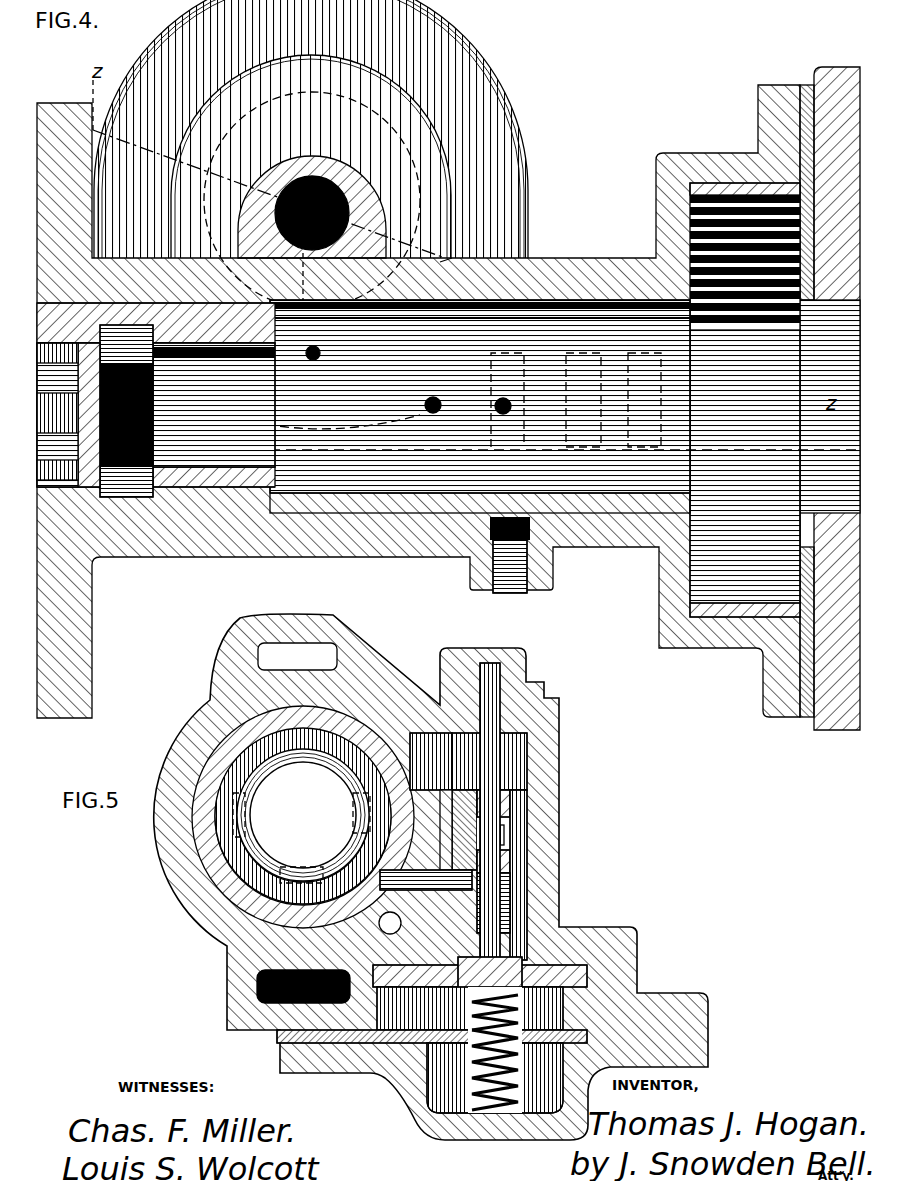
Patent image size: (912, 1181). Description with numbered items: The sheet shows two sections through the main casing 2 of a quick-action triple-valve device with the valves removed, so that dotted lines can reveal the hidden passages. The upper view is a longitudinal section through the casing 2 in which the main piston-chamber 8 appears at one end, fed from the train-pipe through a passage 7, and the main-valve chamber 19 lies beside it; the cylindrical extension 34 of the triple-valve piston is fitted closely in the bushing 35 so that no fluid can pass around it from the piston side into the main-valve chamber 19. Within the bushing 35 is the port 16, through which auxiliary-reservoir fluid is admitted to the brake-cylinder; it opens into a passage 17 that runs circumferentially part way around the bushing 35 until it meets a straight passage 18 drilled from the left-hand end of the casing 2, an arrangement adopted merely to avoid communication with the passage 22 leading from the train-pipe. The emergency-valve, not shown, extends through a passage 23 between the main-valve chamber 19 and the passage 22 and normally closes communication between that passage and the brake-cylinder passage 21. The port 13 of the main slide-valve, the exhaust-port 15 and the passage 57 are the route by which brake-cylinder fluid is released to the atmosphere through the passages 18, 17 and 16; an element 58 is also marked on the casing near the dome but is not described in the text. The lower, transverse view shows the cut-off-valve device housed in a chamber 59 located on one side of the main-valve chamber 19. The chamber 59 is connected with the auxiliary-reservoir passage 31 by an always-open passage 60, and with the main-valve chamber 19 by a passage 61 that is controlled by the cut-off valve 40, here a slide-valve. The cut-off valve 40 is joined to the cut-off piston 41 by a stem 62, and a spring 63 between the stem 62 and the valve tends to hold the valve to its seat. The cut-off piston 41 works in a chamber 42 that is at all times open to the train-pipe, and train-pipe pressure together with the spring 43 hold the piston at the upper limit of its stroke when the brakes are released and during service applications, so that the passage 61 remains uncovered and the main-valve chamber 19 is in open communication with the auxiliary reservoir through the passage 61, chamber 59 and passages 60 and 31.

In FIG. 4, the main casing 2 is at (307, 547).
In FIG. 4, the passage 7 is at (856, 424).
In FIG. 4, the main piston-chamber 8 is at (745, 400).
In FIG. 4, the port 13 is at (156, 395).
In FIG. 4, the exhaust-port 15 is at (510, 394).
In FIG. 4, the port 16 is at (450, 411).
In FIG. 4, the passage 17 is at (433, 397).
In FIG. 4, the passage 18 is at (480, 304).
In FIG. 5, the passage 18 is at (401, 926).
In FIG. 4, the main-valve chamber 19 is at (480, 406).
In FIG. 5, the main-valve chamber 19 is at (303, 815).
In FIG. 4, the brake-cylinder passage 21 is at (68, 415).
In FIG. 4, the passage 22 is at (350, 411).
In FIG. 4, the passage 23 is at (214, 405).
In FIG. 5, the passage 23 is at (303, 973).
In FIG. 5, the passage 31 is at (297, 657).
In FIG. 4, the cylindrical extension 34 is at (644, 400).
In FIG. 4, the bushing 35 is at (619, 510).
In FIG. 5, the bushing 35 is at (452, 800).
In FIG. 5, the cut-off valve 40 is at (452, 840).
In FIG. 5, the cut-off piston 41 is at (480, 985).
In FIG. 5, the chamber 42 is at (512, 1012).
In FIG. 5, the spring 43 is at (511, 1070).
In FIG. 4, the passage 57 is at (530, 525).
In FIG. 4, the dome base 58 is at (458, 269).
In FIG. 4, the chamber 59 is at (312, 204).
In FIG. 5, the chamber 59 is at (492, 761).
In FIG. 5, the passage 60 is at (428, 761).
In FIG. 4, the passage 61 is at (312, 361).
In FIG. 5, the passage 61 is at (426, 882).
In FIG. 5, the stem 62 is at (493, 831).
In FIG. 5, the spring 63 is at (493, 903).